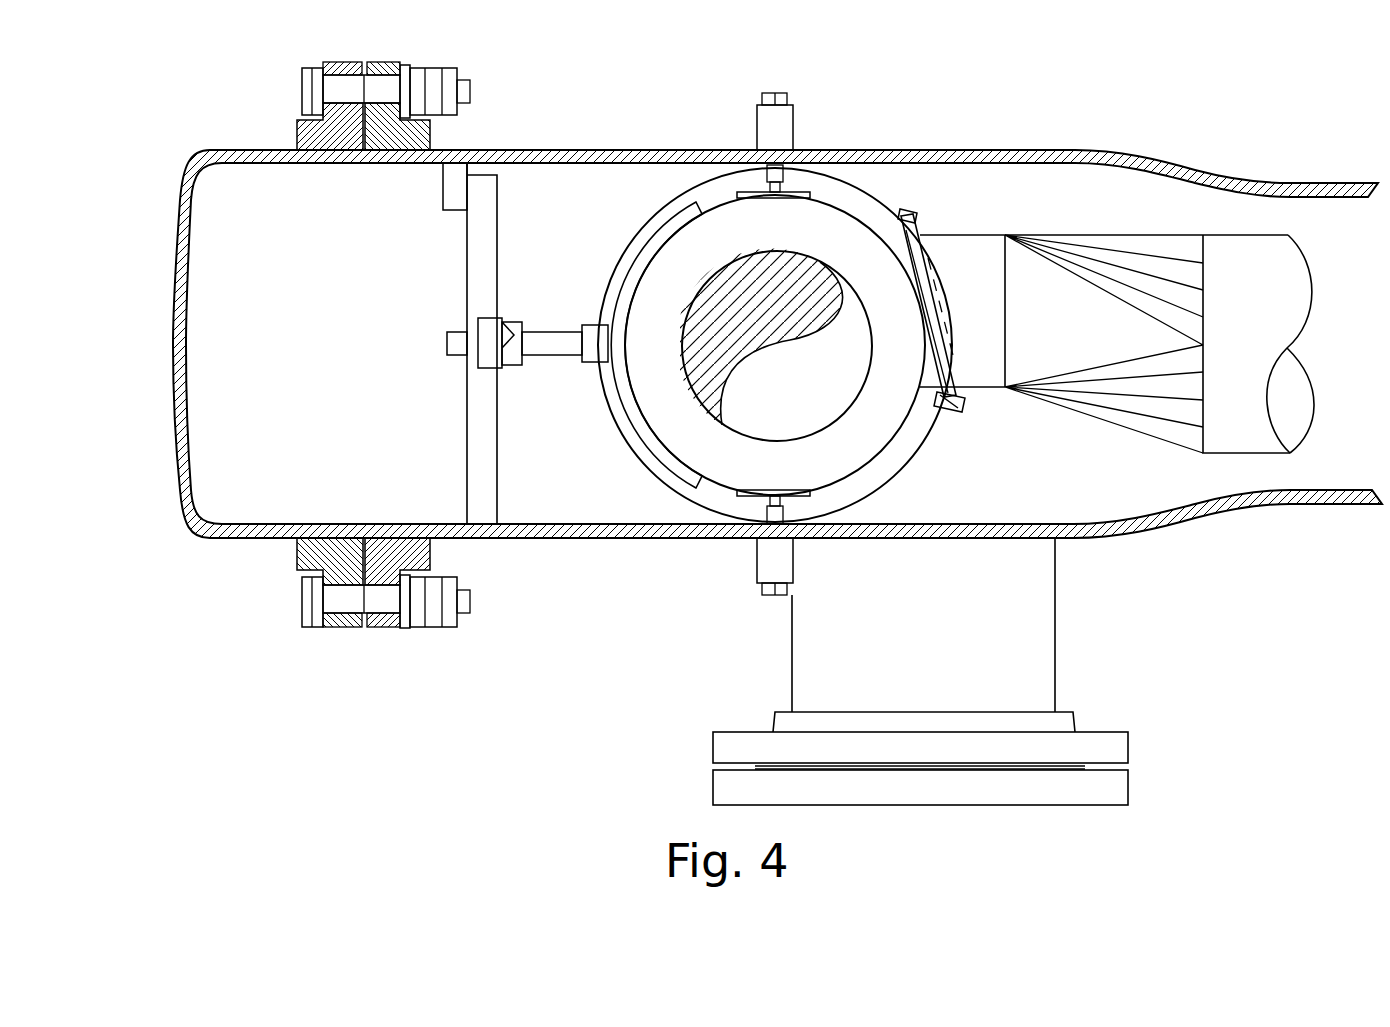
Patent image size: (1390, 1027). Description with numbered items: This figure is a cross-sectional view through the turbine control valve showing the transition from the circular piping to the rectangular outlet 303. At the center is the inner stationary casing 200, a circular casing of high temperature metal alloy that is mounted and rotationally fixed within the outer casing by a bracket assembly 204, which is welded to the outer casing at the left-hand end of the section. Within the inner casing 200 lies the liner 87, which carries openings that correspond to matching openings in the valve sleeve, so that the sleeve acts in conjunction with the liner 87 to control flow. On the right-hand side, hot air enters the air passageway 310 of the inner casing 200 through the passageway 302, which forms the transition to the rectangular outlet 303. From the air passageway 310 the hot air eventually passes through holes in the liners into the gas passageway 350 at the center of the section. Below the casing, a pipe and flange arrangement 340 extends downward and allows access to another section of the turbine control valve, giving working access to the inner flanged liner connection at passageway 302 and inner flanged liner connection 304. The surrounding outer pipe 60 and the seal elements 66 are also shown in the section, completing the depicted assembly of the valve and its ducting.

The conduit / pipe housing 60 is at (1098, 150).
The seals 66 is at (790, 198).
The liner 87 is at (724, 488).
The inner stationary casing 200 is at (897, 437).
The bracket assembly 204 is at (477, 385).
The passageway 302 is at (916, 216).
The rectangular outlet 303 is at (1005, 233).
The inner flanged liner connection 304 is at (900, 215).
The air passageway 310 is at (910, 393).
The pipe and flange arrangement 340 is at (1055, 597).
The gas passageway 350 is at (812, 393).